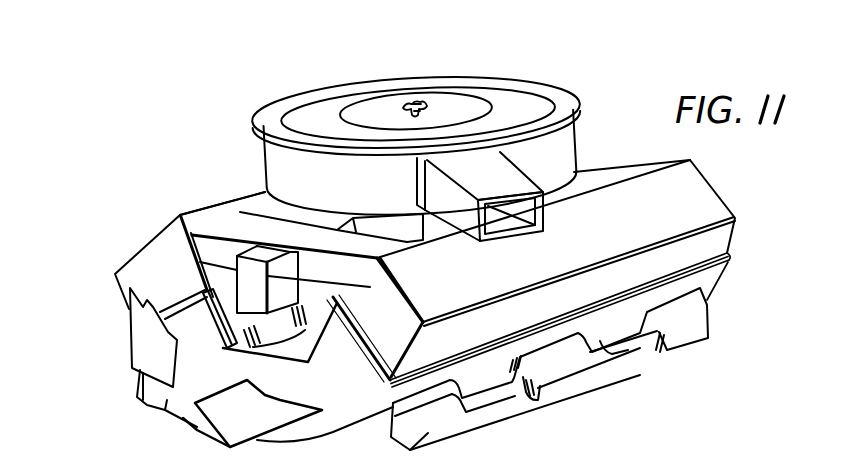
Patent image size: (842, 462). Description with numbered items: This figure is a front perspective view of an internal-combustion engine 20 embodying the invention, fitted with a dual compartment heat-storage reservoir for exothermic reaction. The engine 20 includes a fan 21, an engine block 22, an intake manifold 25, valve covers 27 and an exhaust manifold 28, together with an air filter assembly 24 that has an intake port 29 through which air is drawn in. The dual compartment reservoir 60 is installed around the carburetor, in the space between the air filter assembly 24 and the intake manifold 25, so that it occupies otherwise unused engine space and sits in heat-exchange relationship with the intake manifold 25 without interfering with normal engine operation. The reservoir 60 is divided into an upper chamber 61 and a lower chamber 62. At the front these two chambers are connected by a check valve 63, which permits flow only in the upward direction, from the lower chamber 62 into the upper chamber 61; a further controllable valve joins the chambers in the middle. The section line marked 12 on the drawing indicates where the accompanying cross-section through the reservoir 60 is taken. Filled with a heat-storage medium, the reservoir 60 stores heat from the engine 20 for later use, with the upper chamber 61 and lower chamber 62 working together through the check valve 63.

The section line 12- 12 is at (88, 360).
The internal-combustion engine 20 is at (534, 414).
The fan 21 is at (567, 110).
The engine block 22 is at (348, 386).
The air filter assembly 24 is at (417, 155).
The intake manifold 25 is at (253, 345).
The valve covers 27 is at (574, 254).
The exhaust manifold 28 is at (700, 327).
The intake port 29 is at (505, 232).
The reservoir 60 is at (233, 198).
The upper chamber 61 is at (387, 262).
The lower chamber 62 is at (340, 292).
The check valve 63 is at (245, 293).